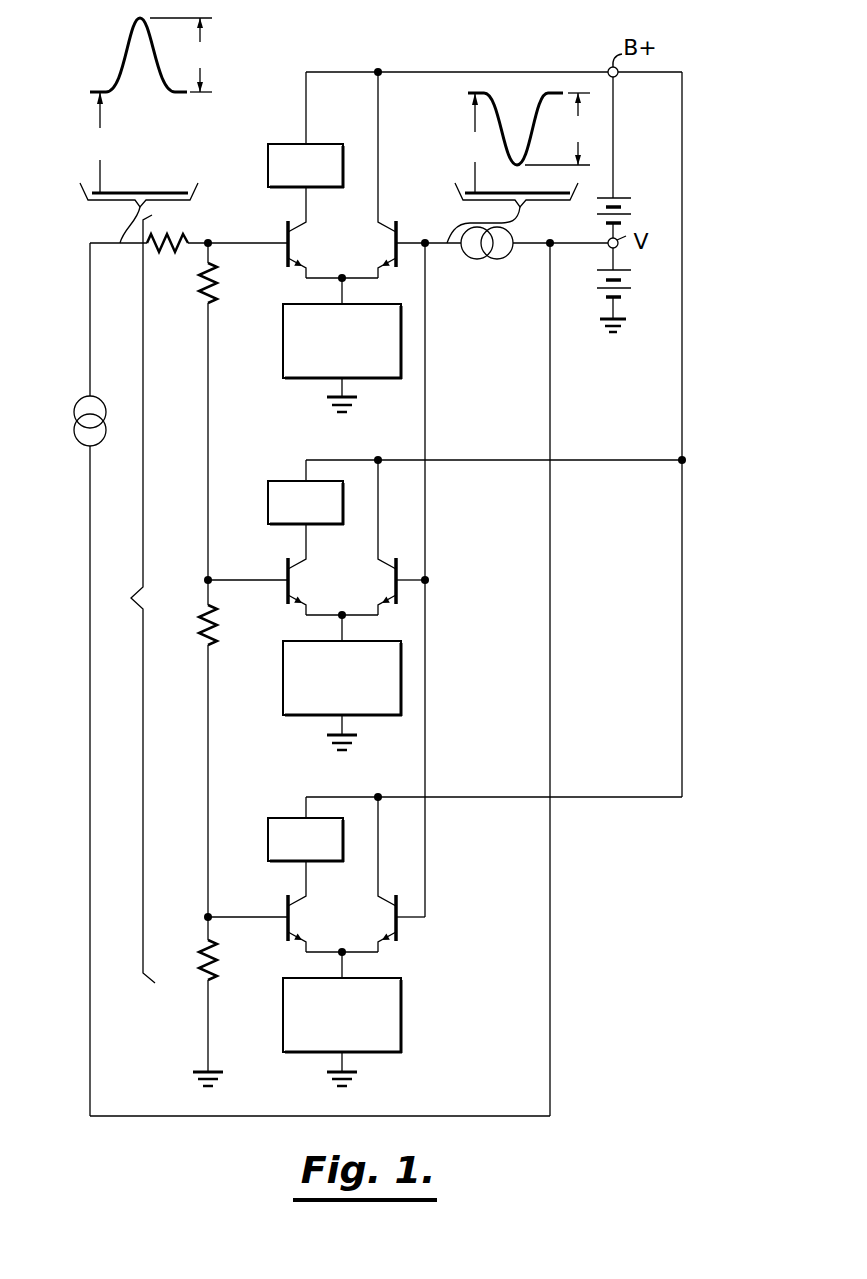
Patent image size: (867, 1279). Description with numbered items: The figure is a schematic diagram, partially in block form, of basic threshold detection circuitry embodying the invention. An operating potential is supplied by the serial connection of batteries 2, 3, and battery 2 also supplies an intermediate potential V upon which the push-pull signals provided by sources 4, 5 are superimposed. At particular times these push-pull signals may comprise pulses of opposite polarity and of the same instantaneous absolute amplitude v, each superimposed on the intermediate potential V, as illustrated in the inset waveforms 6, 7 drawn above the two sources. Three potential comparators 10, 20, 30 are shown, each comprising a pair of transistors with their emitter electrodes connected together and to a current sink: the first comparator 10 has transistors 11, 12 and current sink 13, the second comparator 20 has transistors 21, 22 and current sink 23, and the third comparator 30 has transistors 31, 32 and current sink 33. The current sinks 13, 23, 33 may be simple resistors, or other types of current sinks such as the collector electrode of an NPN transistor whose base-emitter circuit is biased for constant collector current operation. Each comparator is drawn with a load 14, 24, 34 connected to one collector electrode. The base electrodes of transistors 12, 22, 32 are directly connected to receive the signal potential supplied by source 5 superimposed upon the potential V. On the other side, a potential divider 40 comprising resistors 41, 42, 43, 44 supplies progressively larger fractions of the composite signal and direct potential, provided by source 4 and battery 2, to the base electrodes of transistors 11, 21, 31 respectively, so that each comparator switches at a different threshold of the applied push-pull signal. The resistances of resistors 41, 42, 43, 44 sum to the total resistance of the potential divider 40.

The battery 2 is at (626, 283).
The battery 3 is at (628, 208).
The source 4 is at (104, 416).
The source 5 is at (483, 258).
The inset waveform 6 is at (49, 138).
The inset waveform 7 is at (416, 138).
The potential comparator 10 is at (454, 939).
The transistor 11 is at (297, 902).
The transistor 12 is at (386, 902).
The current sink 13 is at (283, 1010).
The load 14 is at (268, 846).
The potential comparator 20 is at (454, 603).
The transistor 21 is at (297, 565).
The transistor 22 is at (386, 565).
The current sink 23 is at (283, 678).
The load 24 is at (268, 508).
The potential comparator 30 is at (313, 240).
The transistor 31 is at (297, 228).
The transistor 32 is at (386, 228).
The current sink 33 is at (283, 340).
The load 34 is at (268, 168).
The potential divider 40 is at (160, 595).
The resistor 41 is at (202, 960).
The resistor 42 is at (203, 626).
The resistor 43 is at (203, 292).
The resistor 44 is at (175, 234).